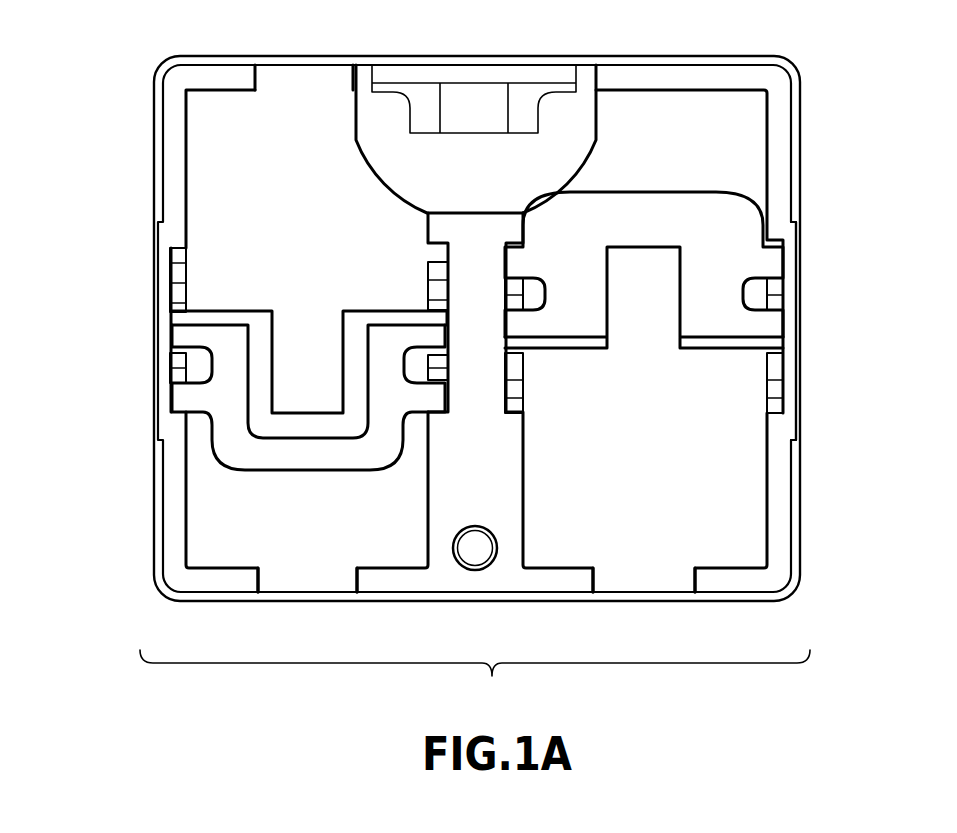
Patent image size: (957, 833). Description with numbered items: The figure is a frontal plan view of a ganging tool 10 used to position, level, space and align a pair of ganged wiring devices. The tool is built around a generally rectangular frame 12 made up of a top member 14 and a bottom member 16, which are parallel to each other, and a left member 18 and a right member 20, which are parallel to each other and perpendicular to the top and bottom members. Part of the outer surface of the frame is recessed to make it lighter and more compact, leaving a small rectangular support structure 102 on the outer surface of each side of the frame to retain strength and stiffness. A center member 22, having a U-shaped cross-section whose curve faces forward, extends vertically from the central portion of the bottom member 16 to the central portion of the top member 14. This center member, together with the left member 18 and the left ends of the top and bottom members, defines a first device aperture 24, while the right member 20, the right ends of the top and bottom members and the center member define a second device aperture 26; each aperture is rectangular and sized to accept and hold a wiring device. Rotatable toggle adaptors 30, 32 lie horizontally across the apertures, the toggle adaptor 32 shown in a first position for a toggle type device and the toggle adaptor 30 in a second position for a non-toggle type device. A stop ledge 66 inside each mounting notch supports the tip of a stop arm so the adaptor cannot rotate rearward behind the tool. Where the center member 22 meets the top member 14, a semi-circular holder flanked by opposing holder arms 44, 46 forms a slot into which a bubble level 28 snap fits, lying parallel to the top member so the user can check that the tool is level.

The ganging tool 10 is at (475, 685).
The frame 12 is at (146, 48).
The top member 14 is at (266, 62).
The bottom member 16 is at (462, 604).
The left member 18 is at (795, 162).
The right member 20 is at (158, 160).
The center member 22 is at (487, 458).
The first device aperture 24 is at (752, 510).
The second device aperture 26 is at (205, 512).
The bubble level 28 is at (479, 108).
The toggle adaptor 30 is at (272, 282).
The toggle adaptor 32 is at (664, 148).
The holder arm 44 is at (353, 118).
The holder arm 46 is at (598, 122).
The stop ledge 66 is at (186, 285).
The support structure 102 is at (168, 312).